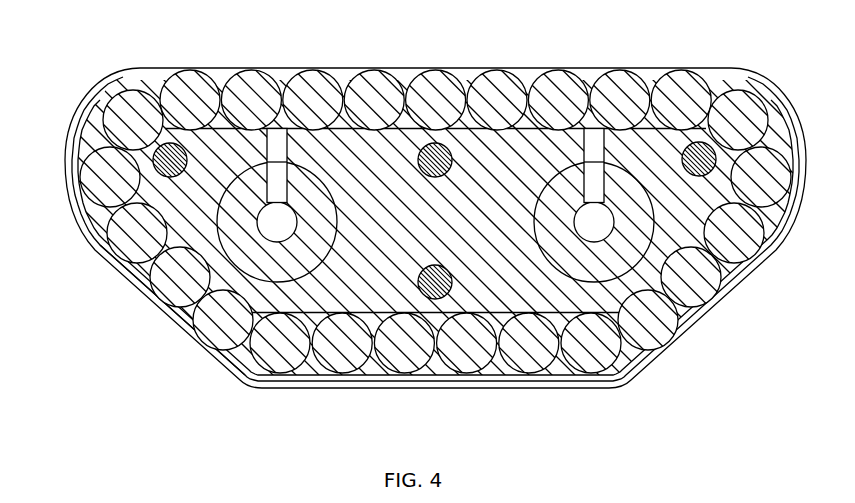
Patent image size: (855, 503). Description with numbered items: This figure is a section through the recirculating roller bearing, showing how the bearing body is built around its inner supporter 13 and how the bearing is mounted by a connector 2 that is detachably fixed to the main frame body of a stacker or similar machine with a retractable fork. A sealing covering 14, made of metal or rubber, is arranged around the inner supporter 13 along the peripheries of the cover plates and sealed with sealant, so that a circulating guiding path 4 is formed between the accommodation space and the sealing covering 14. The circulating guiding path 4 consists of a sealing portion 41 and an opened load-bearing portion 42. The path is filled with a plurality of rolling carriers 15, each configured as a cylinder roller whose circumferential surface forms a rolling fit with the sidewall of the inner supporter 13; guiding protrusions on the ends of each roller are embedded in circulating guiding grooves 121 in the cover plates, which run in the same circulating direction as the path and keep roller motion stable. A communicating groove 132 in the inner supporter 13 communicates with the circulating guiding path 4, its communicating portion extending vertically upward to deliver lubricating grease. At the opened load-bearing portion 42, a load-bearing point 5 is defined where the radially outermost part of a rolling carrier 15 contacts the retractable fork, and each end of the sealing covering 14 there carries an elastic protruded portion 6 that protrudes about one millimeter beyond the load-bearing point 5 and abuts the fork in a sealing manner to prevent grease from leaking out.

The connector 2 is at (150, 295).
The circulating guiding path 4 is at (90, 132).
The load-bearing point 5 is at (373, 68).
The protruded portion 6 is at (137, 70).
The inner supporter 13 is at (594, 218).
The sealing covering 14 is at (180, 337).
The rolling carrier 15 is at (340, 357).
The sealing portion 41 is at (90, 248).
The opened load-bearing portion 42 is at (465, 67).
The circulating guiding groove 121 is at (437, 348).
The communicating groove 132 is at (603, 133).